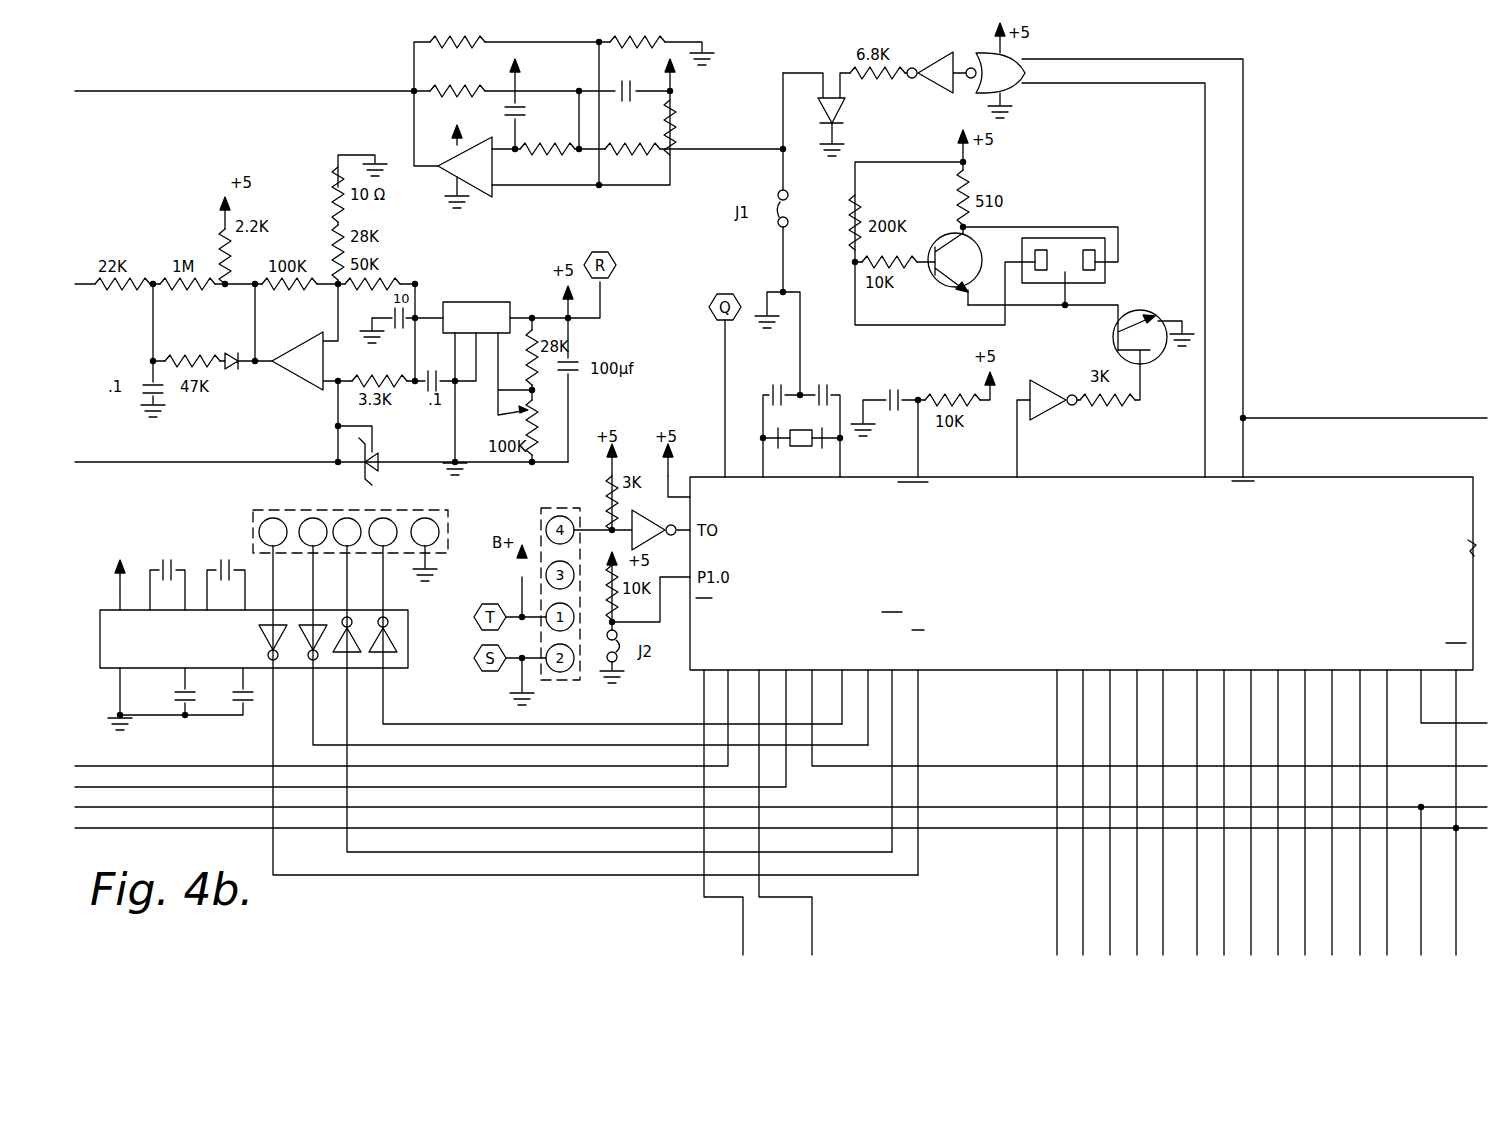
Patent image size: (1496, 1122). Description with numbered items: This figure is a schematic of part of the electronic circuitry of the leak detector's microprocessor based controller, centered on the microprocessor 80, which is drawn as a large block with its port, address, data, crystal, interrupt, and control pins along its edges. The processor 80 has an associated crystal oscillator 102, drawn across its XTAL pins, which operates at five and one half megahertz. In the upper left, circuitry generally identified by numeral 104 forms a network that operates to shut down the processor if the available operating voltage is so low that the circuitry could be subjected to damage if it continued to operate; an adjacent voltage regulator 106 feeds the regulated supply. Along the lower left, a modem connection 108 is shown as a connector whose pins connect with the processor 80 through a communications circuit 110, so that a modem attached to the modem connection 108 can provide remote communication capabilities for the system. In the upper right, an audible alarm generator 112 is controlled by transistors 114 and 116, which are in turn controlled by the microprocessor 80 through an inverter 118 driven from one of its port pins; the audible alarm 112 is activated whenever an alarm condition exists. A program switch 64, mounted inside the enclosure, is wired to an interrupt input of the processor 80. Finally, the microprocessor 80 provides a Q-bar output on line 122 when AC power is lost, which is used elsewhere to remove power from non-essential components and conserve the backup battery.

The low-voltage shutdown network 104 is at (388, 72).
The voltage regulator 106 is at (470, 302).
The modem connection 108 is at (285, 510).
The communications circuit 110 is at (114, 666).
The audible alarm generator 112 is at (1065, 250).
The transistor 114 is at (964, 250).
The transistor 116 is at (1144, 324).
The inverter 118 is at (1042, 412).
The Q-bar output line 122 is at (725, 360).
The crystal oscillator 102 is at (792, 449).
The program switch 64 is at (896, 395).
The microprocessor 80 is at (1343, 490).